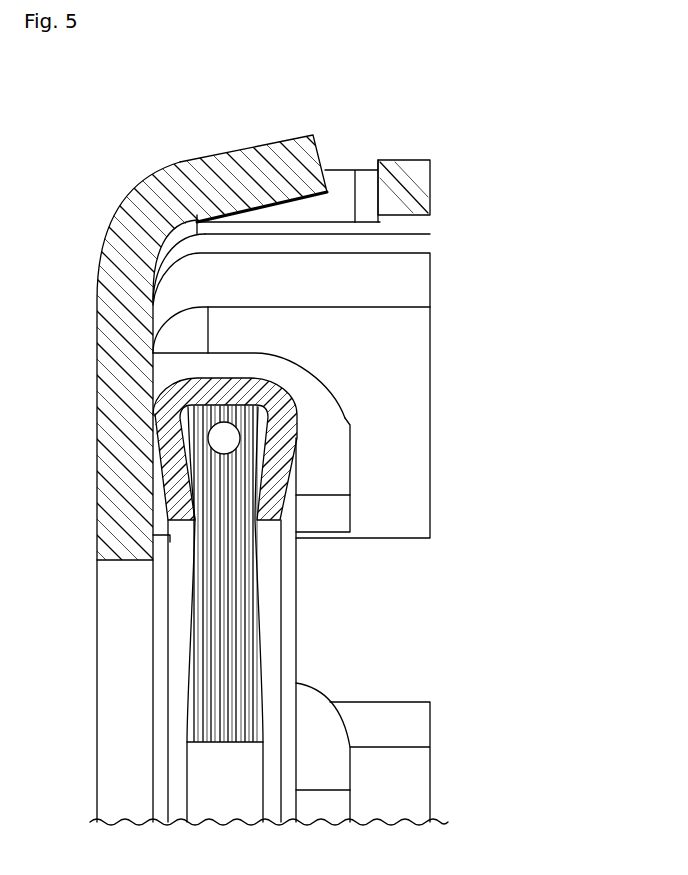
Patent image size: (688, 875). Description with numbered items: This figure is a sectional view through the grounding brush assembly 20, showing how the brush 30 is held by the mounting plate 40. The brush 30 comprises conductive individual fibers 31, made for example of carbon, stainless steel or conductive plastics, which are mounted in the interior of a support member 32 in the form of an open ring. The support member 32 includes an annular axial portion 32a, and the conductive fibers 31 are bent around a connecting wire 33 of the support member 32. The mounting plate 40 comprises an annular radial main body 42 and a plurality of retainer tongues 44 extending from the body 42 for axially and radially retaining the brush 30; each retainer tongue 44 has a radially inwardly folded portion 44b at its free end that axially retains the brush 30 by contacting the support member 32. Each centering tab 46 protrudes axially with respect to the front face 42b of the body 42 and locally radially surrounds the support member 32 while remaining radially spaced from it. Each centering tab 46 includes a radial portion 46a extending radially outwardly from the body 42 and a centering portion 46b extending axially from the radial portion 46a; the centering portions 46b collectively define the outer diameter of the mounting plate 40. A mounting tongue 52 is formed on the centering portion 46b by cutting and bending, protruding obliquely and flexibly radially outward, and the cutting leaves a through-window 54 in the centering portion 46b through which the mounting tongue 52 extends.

The connector 20 is at (449, 145).
The brush 30 is at (308, 640).
The conductive individual fibers 31 is at (200, 713).
The support member 32 is at (148, 398).
The annular axial portion 32a is at (153, 353).
The connecting wire 33 is at (228, 437).
The mounting plate 40 is at (447, 183).
The annular radial main body 42 is at (118, 481).
The front face 42b is at (165, 538).
The retainer tongue 44 is at (338, 454).
The radially inwardly folded portion 44b is at (333, 484).
The centering tab 46 is at (405, 158).
The radial portion 46a is at (125, 277).
The centering portion 46b is at (431, 216).
The mounting tongue 52 is at (284, 162).
The window 54 is at (342, 193).